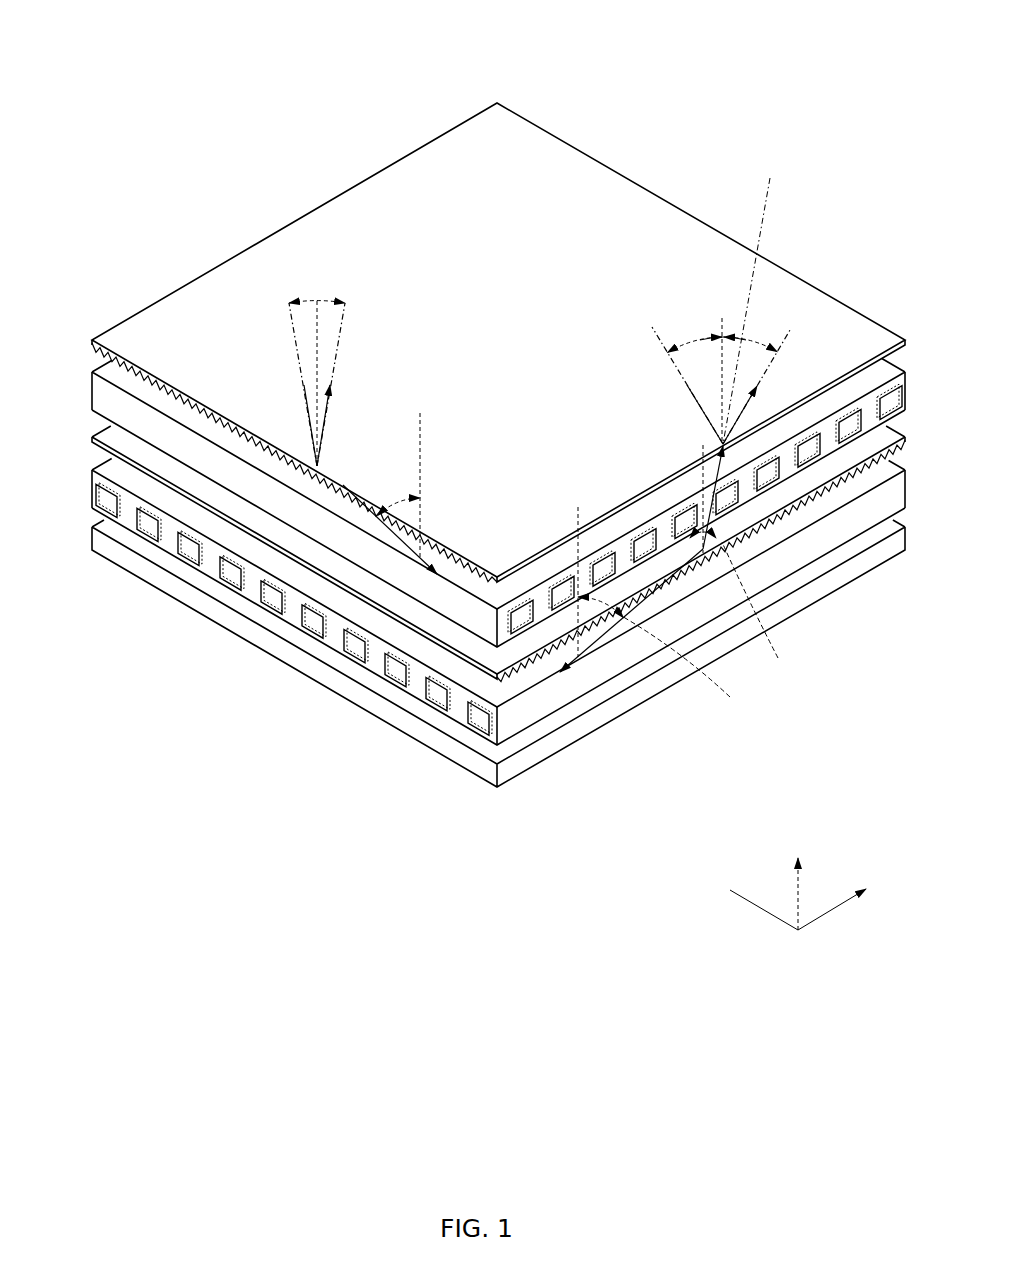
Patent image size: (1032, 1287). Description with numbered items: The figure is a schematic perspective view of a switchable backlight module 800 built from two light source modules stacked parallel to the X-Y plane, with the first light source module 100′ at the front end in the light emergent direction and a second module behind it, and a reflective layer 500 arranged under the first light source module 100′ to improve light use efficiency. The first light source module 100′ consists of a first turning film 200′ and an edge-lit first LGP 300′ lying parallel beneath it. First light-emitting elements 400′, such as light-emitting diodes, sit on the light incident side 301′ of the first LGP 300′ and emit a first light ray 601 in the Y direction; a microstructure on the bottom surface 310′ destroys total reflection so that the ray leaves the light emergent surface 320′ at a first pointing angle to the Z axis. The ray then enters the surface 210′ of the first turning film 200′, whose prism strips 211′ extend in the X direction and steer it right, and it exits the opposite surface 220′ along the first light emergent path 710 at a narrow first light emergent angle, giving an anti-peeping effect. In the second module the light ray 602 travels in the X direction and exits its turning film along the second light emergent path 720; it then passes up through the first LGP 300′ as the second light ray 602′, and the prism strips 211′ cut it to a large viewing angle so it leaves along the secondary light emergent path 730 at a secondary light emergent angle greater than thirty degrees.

The switchable backlight module 800 is at (232, 25).
The first light source module 100′ is at (153, 190).
The first turning film 200′ is at (232, 247).
The surface of the first turning film facing the first LGP 210′ is at (903, 348).
The prism strips 211′ is at (150, 377).
The surface of the first turning film away from the first LGP 220′ is at (452, 160).
The first LGP 300′ is at (76, 362).
The light incident side of the first LGP 301′ is at (825, 432).
The bottom surface of the first LGP 310′ is at (793, 478).
The light emergent surface of the first LGP 320′ is at (810, 412).
The first light-emitting elements 400′ is at (893, 420).
The reflective layer 500 is at (527, 786).
The first light ray 601 is at (450, 588).
The light ray 602 is at (545, 728).
The second light ray 602′ is at (735, 470).
The first light emergent path 710 is at (347, 320).
The second light emergent path 720 is at (730, 297).
The secondary light emergent path 730 is at (665, 352).